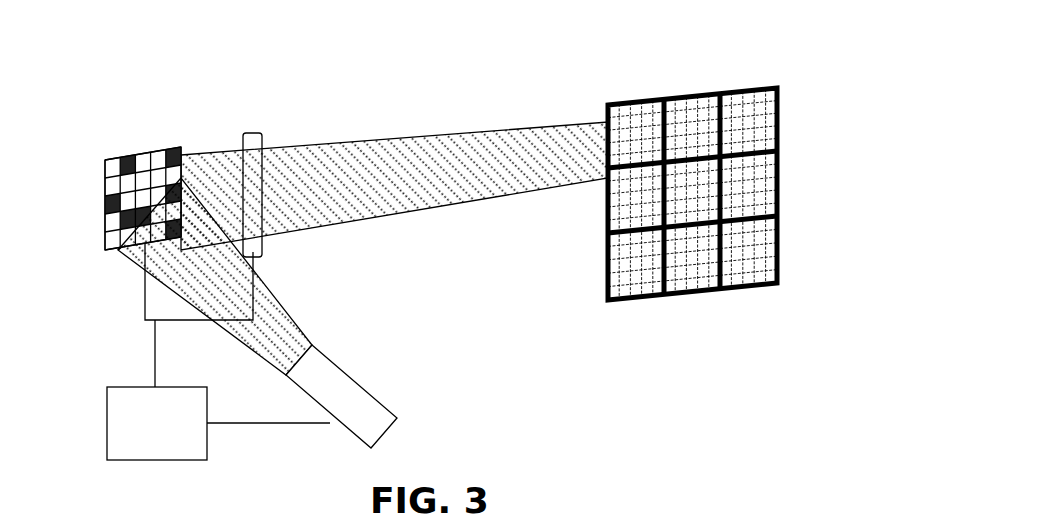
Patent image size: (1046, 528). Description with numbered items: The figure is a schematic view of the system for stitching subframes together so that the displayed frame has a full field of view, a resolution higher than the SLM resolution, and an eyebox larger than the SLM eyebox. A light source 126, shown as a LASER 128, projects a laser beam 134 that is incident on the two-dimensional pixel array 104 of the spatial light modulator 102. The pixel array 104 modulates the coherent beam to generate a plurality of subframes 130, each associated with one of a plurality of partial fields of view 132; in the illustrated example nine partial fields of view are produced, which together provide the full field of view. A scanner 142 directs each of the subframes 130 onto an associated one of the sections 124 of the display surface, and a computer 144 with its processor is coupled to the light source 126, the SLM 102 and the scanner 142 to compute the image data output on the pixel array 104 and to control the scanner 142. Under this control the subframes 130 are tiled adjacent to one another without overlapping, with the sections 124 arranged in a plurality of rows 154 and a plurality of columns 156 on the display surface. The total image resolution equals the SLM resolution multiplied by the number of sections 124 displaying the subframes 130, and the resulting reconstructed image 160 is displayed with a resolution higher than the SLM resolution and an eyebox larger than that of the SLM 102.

The spatial light modulator 102 is at (98, 182).
The two-dimensional pixel array 104 is at (106, 222).
The sections 124 is at (677, 216).
The light source 126 is at (336, 391).
The LASER 128 is at (363, 392).
The subframes 130 is at (677, 216).
The partial fields of view 132 is at (692, 194).
The laser beam 134 is at (296, 316).
The scanner 142 is at (250, 133).
The computer 144 is at (140, 436).
The rows 154 is at (789, 87).
The columns 156 is at (665, 80).
The reconstructed image 160 is at (677, 237).